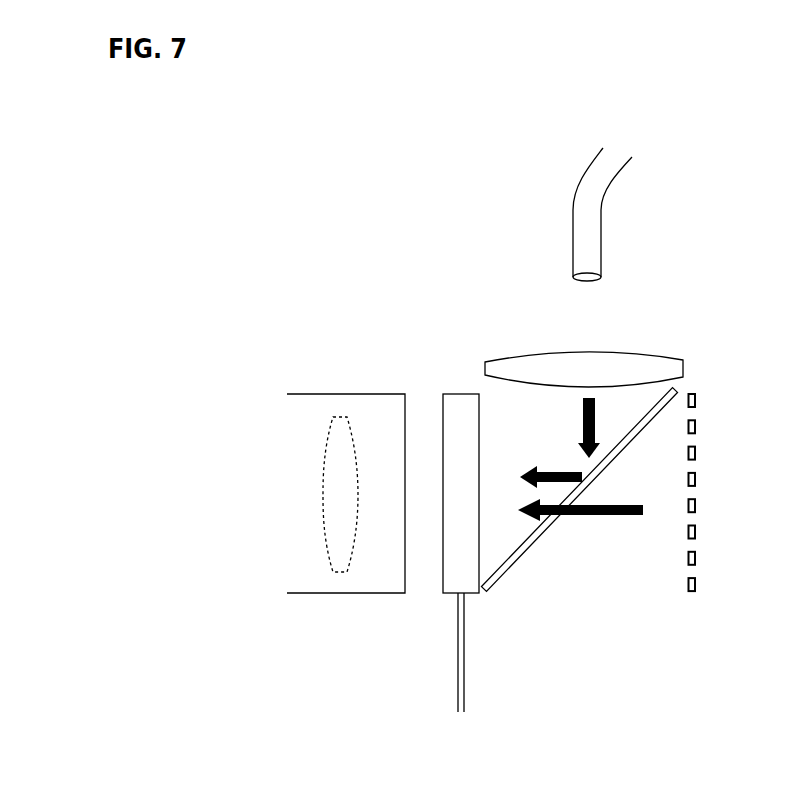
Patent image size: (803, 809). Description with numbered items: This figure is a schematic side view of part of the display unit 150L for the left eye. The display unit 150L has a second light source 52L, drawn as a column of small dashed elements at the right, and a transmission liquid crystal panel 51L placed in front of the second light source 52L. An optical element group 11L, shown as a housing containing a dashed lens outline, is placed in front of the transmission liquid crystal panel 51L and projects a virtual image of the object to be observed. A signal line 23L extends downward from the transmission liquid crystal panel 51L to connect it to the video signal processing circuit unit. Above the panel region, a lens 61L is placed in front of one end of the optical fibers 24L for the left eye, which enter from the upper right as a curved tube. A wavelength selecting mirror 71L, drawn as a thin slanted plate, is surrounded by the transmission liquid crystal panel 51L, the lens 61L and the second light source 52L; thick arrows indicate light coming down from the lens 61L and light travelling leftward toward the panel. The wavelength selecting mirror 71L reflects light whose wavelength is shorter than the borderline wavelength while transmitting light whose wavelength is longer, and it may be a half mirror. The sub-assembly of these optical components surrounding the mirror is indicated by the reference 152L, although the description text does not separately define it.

The display unit for the left eye 150L is at (484, 166).
The left display optical system 152L is at (371, 273).
The optical fibers for the left eye 24L is at (601, 228).
The lens 61L is at (538, 352).
The transmission liquid crystal panel 51L is at (443, 404).
The optical element group 11L is at (340, 593).
The signal line 23L is at (458, 662).
The wavelength selecting mirror 71L is at (527, 545).
The second light source 52L is at (693, 593).